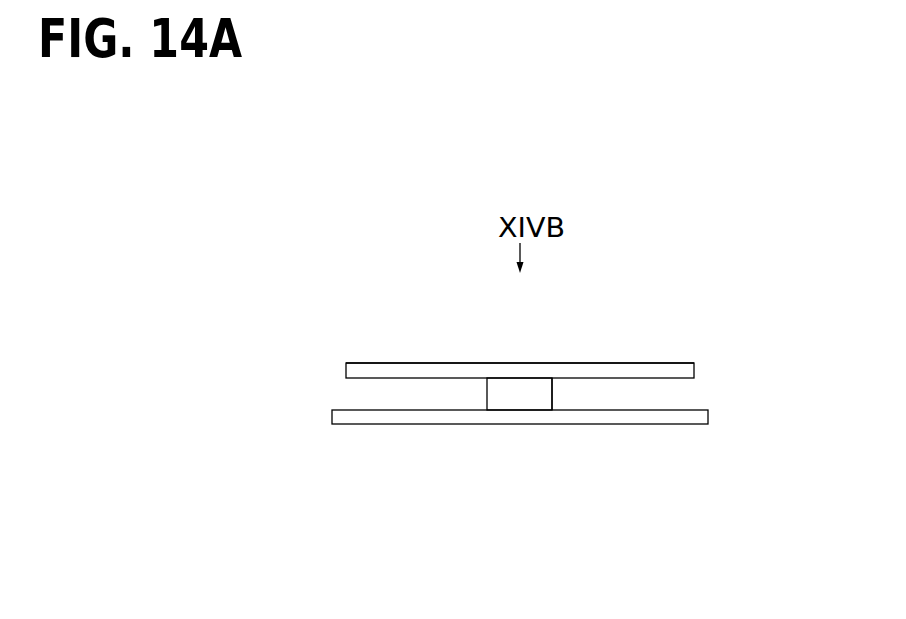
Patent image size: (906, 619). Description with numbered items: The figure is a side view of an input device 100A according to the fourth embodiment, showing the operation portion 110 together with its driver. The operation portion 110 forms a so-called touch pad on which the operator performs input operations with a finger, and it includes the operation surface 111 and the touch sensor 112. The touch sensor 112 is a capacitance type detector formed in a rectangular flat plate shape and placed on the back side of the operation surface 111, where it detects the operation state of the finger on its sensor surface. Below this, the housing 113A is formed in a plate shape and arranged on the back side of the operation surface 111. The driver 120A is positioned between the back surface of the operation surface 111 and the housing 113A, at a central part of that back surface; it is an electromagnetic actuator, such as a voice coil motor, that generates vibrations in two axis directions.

The input device 100A is at (321, 311).
The operation portion 110 is at (363, 353).
The operation surface 111 is at (413, 362).
The touch sensor 112 is at (494, 363).
The driver 120A is at (553, 392).
The housing 113A is at (640, 424).